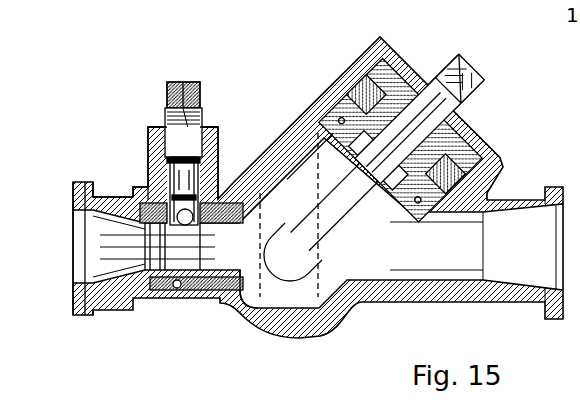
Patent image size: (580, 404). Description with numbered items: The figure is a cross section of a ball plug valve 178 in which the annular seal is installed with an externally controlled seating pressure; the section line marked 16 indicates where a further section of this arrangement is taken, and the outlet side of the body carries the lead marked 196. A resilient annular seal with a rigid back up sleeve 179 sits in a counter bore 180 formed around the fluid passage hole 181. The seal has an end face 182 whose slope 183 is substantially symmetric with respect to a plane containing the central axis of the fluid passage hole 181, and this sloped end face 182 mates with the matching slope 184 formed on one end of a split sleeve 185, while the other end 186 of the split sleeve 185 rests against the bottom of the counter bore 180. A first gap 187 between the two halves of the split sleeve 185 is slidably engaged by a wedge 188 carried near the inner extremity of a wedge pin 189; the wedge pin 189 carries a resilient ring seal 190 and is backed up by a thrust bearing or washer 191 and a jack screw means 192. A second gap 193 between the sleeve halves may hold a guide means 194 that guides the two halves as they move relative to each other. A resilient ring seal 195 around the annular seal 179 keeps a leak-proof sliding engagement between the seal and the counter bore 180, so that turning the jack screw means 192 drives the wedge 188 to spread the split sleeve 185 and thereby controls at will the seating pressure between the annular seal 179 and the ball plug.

The section line 16- 16 is at (185, 63).
The ball plug valve 178 is at (270, 335).
The resilient annular seal with a rigid back up sleeve 179 is at (245, 300).
The counter bore 180 is at (240, 300).
The fluid passage hole 181 is at (110, 205).
The end face 182 is at (105, 305).
The slope 183 is at (73, 212).
The matching slope 184 is at (180, 290).
The split sleeve 185 is at (215, 200).
The other end of the split sleeve 186 is at (112, 195).
The first gap 187 is at (150, 165).
The wedge 188 is at (205, 127).
The wedge pin 189 is at (197, 113).
The resilient ring seal 190 is at (147, 190).
The thrust bearing or washer 191 is at (150, 130).
The jack screw means 192 is at (190, 82).
The second gap 193 is at (167, 290).
The guide means 194 is at (125, 290).
The resilient ring seal 195 is at (258, 165).
The valve stem and bonnet 196 is at (352, 234).